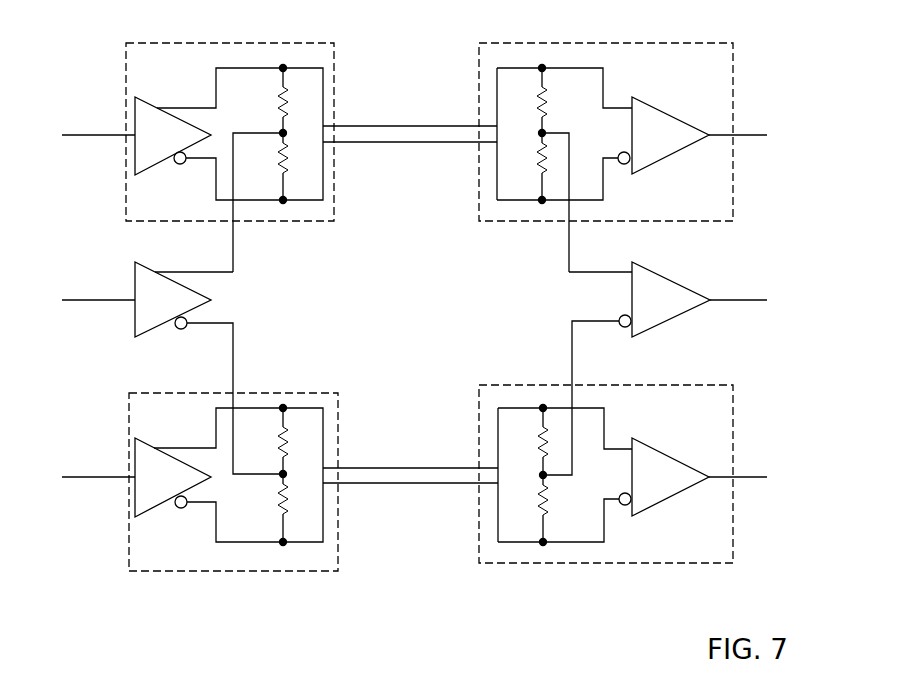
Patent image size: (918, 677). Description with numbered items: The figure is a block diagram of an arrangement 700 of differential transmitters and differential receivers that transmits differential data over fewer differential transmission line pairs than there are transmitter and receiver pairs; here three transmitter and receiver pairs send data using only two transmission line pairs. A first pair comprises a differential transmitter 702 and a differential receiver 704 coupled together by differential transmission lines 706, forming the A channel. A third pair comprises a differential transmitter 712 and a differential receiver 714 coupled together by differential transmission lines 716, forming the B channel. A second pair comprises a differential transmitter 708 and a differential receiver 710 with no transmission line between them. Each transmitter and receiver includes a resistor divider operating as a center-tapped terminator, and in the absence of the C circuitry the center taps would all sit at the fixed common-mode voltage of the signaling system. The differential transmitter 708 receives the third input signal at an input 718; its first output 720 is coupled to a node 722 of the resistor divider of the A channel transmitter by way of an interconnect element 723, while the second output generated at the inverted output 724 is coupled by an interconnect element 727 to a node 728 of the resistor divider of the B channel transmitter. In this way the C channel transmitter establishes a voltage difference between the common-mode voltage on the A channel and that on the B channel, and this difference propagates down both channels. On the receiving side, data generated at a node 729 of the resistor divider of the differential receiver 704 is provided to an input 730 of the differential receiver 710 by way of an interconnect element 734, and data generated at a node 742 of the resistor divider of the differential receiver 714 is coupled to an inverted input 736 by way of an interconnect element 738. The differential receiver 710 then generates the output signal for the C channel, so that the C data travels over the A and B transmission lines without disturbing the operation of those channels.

The arrangement 700 is at (127, 606).
The differential transmitter 702 is at (240, 42).
The differential receiver 704 is at (733, 62).
The differential transmission lines 706 is at (402, 125).
The differential transmitter 708 is at (135, 268).
The differential receiver 710 is at (672, 279).
The differential transmitter 712 is at (290, 393).
The differential receiver 714 is at (690, 383).
The differential transmission lines 716 is at (402, 467).
The input 718 is at (129, 301).
The first output 720 is at (158, 271).
The node 722 is at (283, 133).
The interconnect element 723 is at (233, 255).
The inverted output 724 is at (179, 330).
The interconnect element 727 is at (233, 357).
The node 728 is at (283, 474).
The node 729 is at (542, 133).
The input 730 is at (631, 279).
The interconnect element 734 is at (572, 255).
The inverted input 736 is at (626, 328).
The interconnect element 738 is at (714, 296).
The node 742 is at (543, 475).